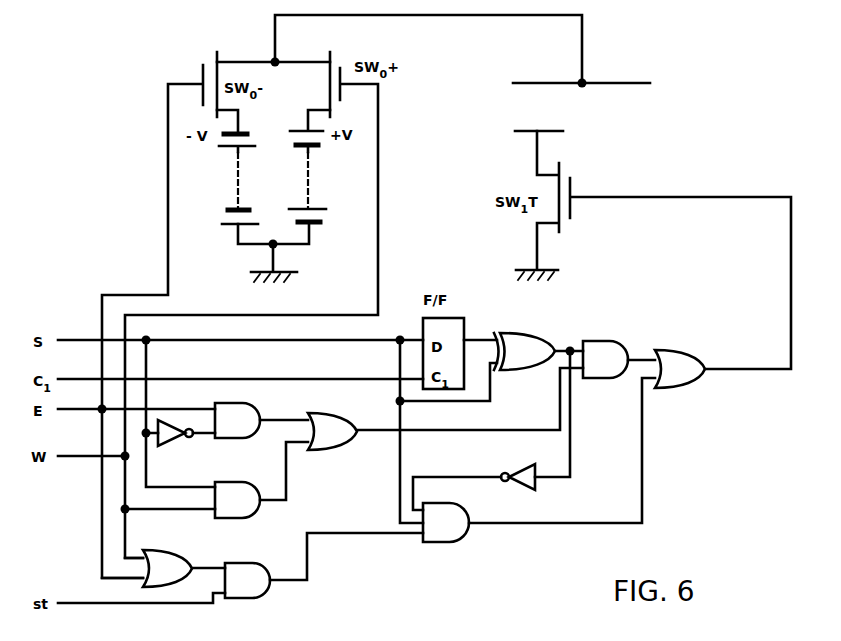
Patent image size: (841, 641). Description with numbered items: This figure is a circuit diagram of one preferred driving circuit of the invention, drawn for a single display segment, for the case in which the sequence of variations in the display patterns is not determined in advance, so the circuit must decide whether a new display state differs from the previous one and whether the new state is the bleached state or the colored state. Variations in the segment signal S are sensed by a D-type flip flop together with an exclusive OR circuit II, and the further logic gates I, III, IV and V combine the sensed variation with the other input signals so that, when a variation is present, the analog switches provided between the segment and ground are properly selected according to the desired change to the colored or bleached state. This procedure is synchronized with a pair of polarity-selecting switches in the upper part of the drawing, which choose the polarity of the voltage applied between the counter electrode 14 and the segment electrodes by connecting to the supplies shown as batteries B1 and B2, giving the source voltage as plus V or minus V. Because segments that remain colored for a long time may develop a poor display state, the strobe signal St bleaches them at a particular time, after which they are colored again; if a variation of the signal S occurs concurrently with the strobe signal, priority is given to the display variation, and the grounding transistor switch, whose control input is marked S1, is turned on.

The counter electrode 14 is at (581, 70).
The OR gate I is at (337, 436).
The exclusive OR gate II is at (533, 349).
The AND gate III is at (615, 356).
The AND gate IV is at (458, 529).
The OR gate V is at (683, 368).
The battery B1 is at (318, 208).
The battery B2 is at (229, 210).
The control signal line S1 is at (523, 128).